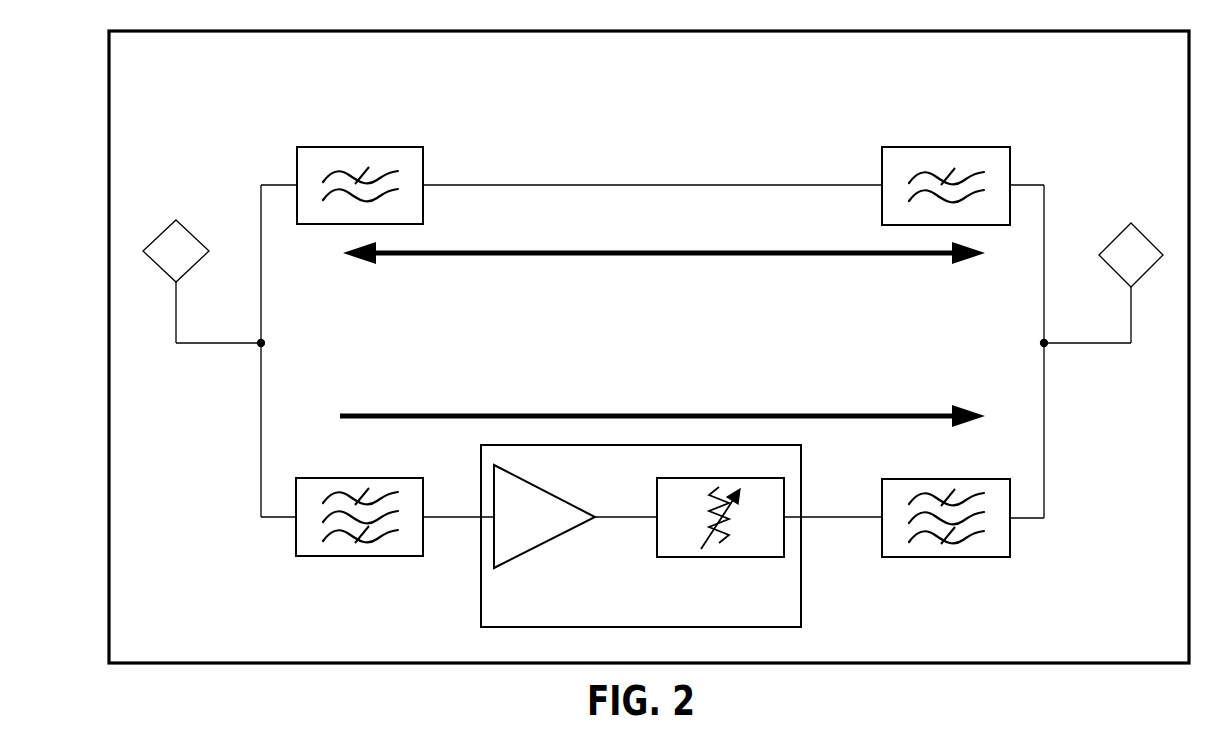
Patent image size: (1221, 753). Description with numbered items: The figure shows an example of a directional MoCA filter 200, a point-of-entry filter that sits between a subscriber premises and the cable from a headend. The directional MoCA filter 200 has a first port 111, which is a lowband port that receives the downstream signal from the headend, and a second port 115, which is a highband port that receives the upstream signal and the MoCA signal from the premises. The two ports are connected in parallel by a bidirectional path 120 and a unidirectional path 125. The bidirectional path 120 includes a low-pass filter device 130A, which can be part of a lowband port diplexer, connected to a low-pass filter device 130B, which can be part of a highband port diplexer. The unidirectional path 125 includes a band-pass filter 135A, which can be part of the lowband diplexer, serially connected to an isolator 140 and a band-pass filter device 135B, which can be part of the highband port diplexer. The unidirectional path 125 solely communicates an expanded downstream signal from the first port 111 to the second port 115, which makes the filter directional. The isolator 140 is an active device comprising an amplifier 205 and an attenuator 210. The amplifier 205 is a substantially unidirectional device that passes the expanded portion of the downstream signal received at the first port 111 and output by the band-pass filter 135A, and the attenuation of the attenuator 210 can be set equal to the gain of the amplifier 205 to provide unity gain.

The first port 111 is at (176, 251).
The second port 115 is at (1131, 255).
The bidirectional path 120 is at (525, 258).
The unidirectional path 125 is at (744, 413).
The low-pass filter device 130A is at (362, 146).
The low-pass filter device 130B is at (950, 147).
The band-pass filter 135A is at (367, 556).
The band-pass filter device 135B is at (945, 557).
The isolator 140 is at (641, 536).
The directional MoCA filter 200 is at (1184, 657).
The amplifier 205 is at (548, 541).
The attenuator 210 is at (727, 557).